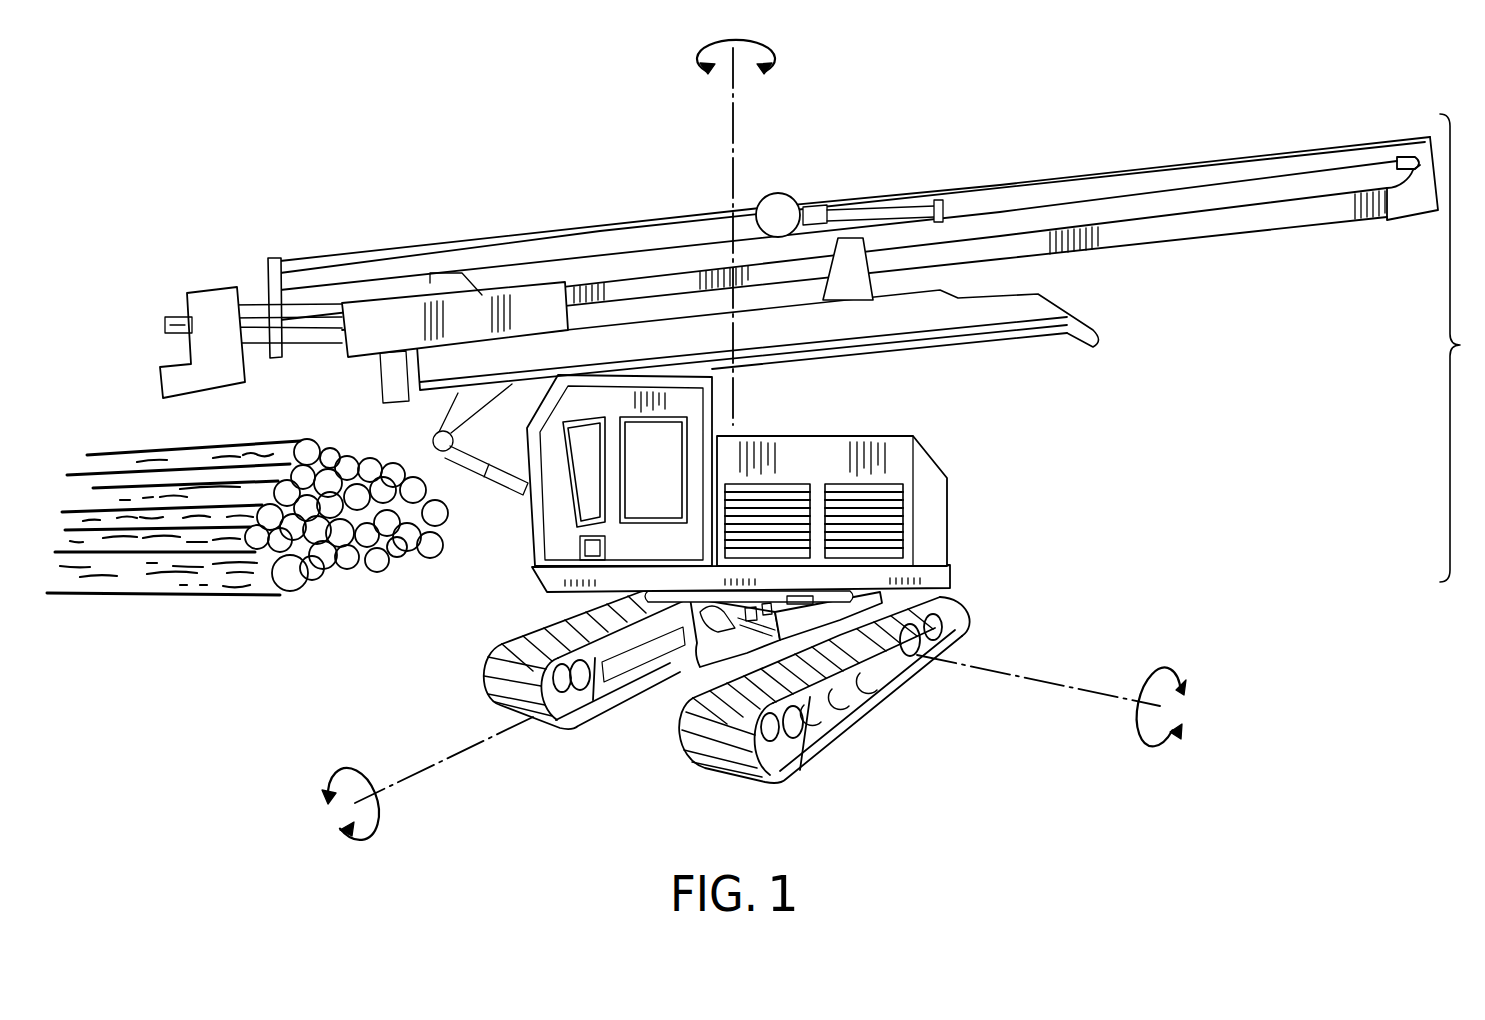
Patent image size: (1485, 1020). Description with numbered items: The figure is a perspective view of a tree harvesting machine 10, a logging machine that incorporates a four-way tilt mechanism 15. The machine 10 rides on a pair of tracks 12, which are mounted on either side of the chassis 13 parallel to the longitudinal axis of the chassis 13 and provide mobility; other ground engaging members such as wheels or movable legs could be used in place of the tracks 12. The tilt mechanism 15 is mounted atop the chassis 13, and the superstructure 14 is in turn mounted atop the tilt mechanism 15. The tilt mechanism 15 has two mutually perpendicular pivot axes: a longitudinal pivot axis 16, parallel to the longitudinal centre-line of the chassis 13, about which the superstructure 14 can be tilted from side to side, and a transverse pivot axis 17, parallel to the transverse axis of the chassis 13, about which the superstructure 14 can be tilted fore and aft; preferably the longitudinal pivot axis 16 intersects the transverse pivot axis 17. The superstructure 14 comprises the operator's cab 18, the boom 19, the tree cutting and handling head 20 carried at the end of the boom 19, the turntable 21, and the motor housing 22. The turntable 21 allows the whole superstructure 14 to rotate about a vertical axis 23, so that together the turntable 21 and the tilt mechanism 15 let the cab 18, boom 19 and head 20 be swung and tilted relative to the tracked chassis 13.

The tree harvesting machine 10 is at (1216, 127).
The tracks 12 is at (500, 687).
The chassis 13 is at (710, 657).
The superstructure 14 is at (1462, 348).
The tilt mechanism 15 is at (865, 660).
The longitudinal pivot axis 16 is at (468, 752).
The transverse pivot axis 17 is at (1048, 684).
The operator's cab 18 is at (657, 443).
The boom 19 is at (377, 248).
The tree cutting and handling head 20 is at (214, 284).
The turntable 21 is at (947, 596).
The motor housing 22 is at (831, 480).
The vertical axis 23 is at (752, 116).